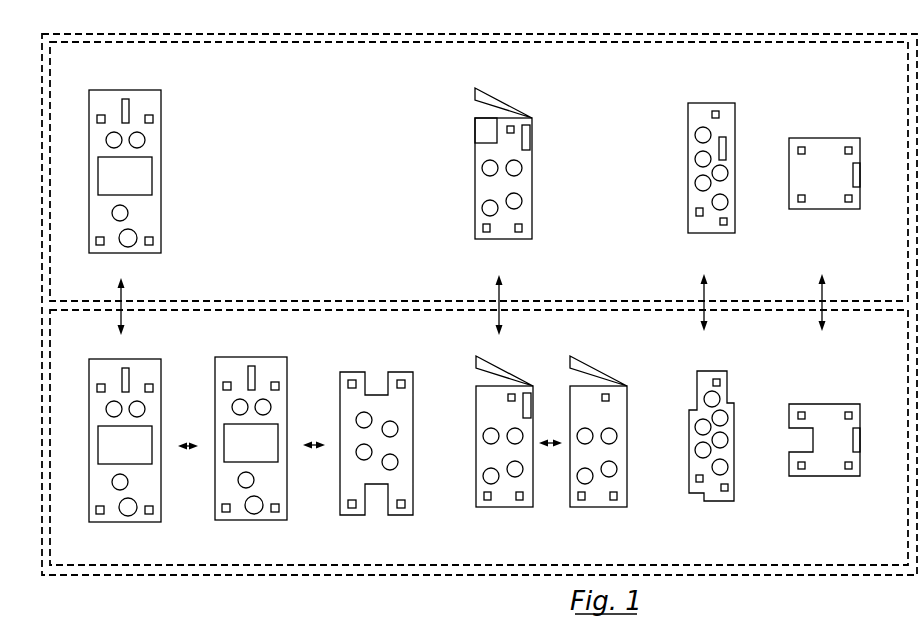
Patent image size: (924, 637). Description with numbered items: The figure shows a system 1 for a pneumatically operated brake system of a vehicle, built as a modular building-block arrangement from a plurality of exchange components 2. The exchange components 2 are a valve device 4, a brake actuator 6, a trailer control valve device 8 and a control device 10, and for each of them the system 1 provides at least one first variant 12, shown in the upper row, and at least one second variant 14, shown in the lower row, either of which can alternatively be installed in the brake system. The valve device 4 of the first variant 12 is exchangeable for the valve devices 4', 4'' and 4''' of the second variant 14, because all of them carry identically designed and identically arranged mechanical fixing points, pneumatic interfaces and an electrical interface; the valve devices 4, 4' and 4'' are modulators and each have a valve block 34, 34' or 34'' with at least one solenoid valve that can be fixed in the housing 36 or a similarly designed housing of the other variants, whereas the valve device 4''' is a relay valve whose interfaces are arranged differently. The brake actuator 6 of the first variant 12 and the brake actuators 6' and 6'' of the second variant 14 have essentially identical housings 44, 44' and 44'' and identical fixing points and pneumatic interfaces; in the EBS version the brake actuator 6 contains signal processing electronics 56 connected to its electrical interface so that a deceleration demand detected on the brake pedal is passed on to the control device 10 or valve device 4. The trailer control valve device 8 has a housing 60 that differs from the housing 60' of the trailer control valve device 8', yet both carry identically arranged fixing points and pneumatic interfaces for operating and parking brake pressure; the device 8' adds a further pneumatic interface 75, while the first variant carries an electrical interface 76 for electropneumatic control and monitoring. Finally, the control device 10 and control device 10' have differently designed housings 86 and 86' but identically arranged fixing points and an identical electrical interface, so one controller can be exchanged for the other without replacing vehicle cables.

The system 1 is at (158, 575).
The exchange components 2 is at (866, 70).
The valve device 4 is at (125, 157).
The valve device 4' is at (127, 426).
The valve device 4'' is at (254, 424).
The valve device 4''' is at (376, 425).
The brake actuator 6 is at (513, 177).
The brake actuator 6' is at (515, 445).
The brake actuator 6'' is at (611, 445).
The trailer control valve device 8 is at (711, 154).
The trailer control valve device 8' is at (711, 421).
The control device 10 is at (824, 152).
The control device 10' is at (824, 418).
The first variant 12 is at (82, 180).
The second variant 14 is at (82, 446).
The valve block 34 is at (125, 176).
The valve block 34' is at (125, 445).
The valve block 34'' is at (251, 443).
The housing 36 is at (145, 213).
The housing 44 is at (486, 189).
The housing 44' is at (487, 457).
The housing 44'' is at (581, 457).
The signal processing electronics 56 is at (486, 132).
The housing 60 is at (744, 125).
The housing 60' is at (748, 393).
The pneumatic interface 75 is at (720, 418).
The electrical interface 76 is at (722, 148).
The housing 86 is at (828, 177).
The housing 86' is at (831, 441).